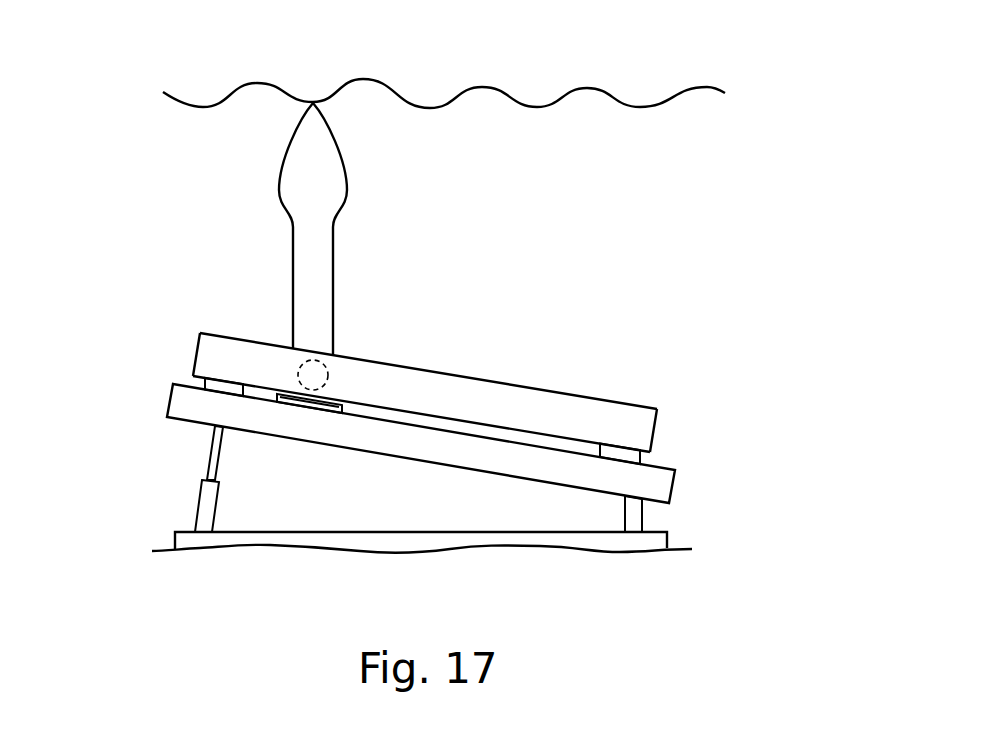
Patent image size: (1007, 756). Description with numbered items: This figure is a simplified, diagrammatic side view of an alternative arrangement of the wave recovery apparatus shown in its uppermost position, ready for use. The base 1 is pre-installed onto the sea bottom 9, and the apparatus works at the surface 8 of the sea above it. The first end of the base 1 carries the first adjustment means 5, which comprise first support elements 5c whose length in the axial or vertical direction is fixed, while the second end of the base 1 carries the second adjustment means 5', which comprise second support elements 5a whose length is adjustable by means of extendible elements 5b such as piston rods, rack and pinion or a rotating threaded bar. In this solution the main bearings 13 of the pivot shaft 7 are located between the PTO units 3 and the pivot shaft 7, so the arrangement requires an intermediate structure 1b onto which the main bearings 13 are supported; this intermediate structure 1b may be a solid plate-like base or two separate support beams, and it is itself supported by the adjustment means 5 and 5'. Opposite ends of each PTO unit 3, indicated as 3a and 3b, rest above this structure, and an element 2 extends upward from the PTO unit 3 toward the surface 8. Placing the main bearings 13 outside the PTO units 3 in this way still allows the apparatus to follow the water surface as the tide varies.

The surface of the sea 8 is at (590, 88).
The welding torch 2 is at (293, 246).
The PTO unit 3 is at (517, 388).
The first end of carrier plate 3a is at (653, 432).
The second end of carrier plate 3b is at (197, 353).
The pivot shaft 7 is at (330, 373).
The main bearings 13 is at (357, 405).
The intermediate structure 1b is at (670, 487).
The base 1 is at (278, 532).
The first adjustment means 5 is at (730, 474).
The second adjustment means 5' is at (140, 405).
The second support elements 5a is at (203, 511).
The extendible elements 5b is at (209, 450).
The first support elements 5c is at (625, 517).
The sea bottom 9 is at (676, 547).